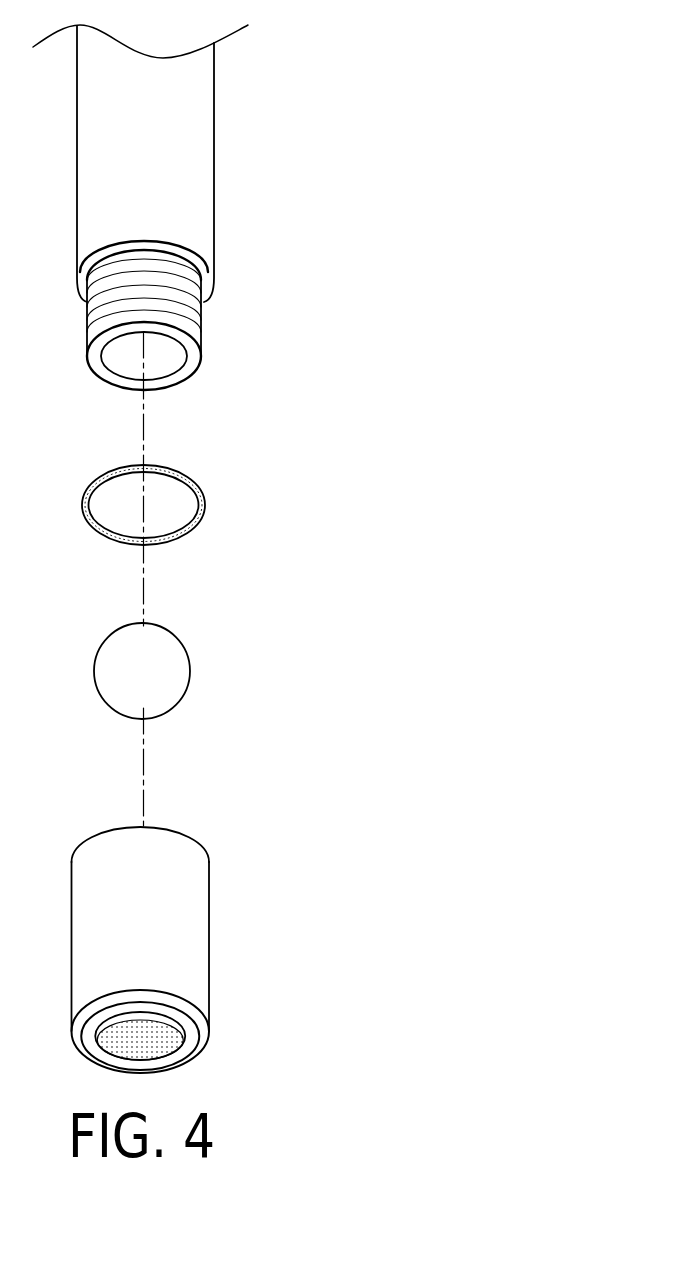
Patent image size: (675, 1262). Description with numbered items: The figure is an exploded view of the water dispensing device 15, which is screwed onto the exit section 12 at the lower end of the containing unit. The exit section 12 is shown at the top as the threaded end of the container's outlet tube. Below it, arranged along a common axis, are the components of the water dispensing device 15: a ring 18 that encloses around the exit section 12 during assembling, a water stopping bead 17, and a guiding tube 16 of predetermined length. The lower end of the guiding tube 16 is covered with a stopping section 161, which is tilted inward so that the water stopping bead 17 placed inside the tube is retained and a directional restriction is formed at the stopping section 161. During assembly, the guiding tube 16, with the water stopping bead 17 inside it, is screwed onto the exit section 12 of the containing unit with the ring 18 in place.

The exit section 12 is at (177, 144).
The water dispensing device 15 is at (278, 800).
The guiding tube 16 is at (192, 938).
The stopping section 161 is at (160, 1040).
The water stopping bead 17 is at (163, 675).
The ring 18 is at (205, 497).